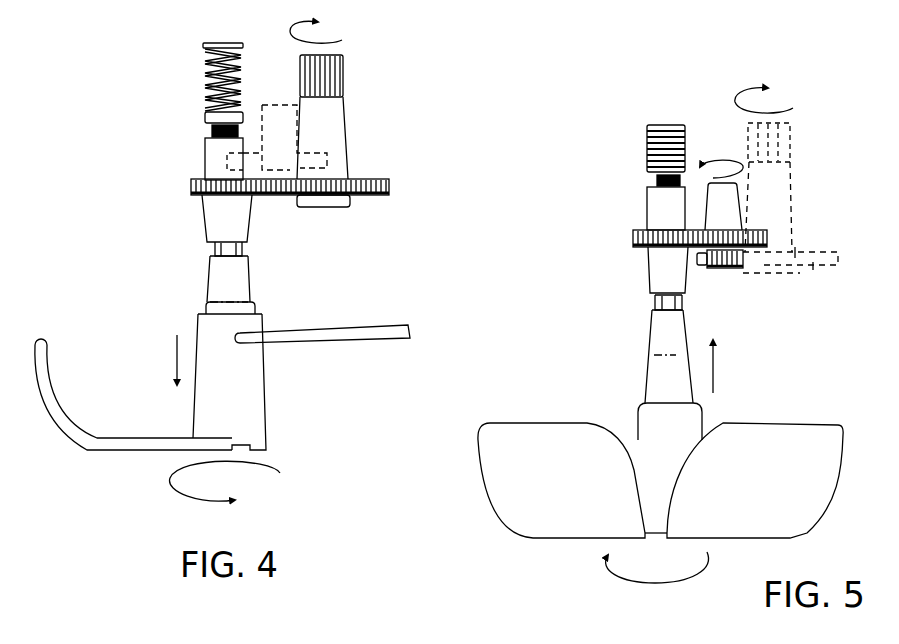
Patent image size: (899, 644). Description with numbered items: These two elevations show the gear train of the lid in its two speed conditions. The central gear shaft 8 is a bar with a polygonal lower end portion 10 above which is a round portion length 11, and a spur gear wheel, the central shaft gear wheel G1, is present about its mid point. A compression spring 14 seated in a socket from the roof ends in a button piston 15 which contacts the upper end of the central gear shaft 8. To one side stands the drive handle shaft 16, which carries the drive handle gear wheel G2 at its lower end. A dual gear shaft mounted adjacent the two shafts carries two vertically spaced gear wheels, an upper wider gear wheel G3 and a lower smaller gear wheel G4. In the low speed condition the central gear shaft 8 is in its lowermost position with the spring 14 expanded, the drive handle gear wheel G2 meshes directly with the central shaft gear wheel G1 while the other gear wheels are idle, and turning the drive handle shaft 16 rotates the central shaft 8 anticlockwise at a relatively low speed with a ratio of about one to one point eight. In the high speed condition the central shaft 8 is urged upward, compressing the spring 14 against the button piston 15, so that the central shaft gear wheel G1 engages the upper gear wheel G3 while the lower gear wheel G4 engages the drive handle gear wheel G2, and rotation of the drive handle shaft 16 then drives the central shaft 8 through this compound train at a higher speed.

In FIG. 4, the central gear shaft 8 is at (225, 214).
In FIG. 4, the polygonal lower end portion 10 is at (243, 249).
In FIG. 4, the round portion length 11 is at (210, 165).
In FIG. 4, the compression spring 14 is at (207, 58).
In FIG. 5, the compression spring 14 is at (684, 140).
In FIG. 4, the button piston 15 is at (212, 131).
In FIG. 4, the drive handle shaft 16 is at (320, 136).
In FIG. 4, the central shaft gear wheel G1 is at (195, 191).
In FIG. 5, the central shaft gear wheel G1 is at (634, 243).
In FIG. 4, the drive handle gear wheel G2 is at (390, 184).
In FIG. 5, the drive handle gear wheel G2 is at (815, 278).
In FIG. 5, the upper gear wheel G3 is at (770, 239).
In FIG. 5, the lower gear wheel G4 is at (719, 271).